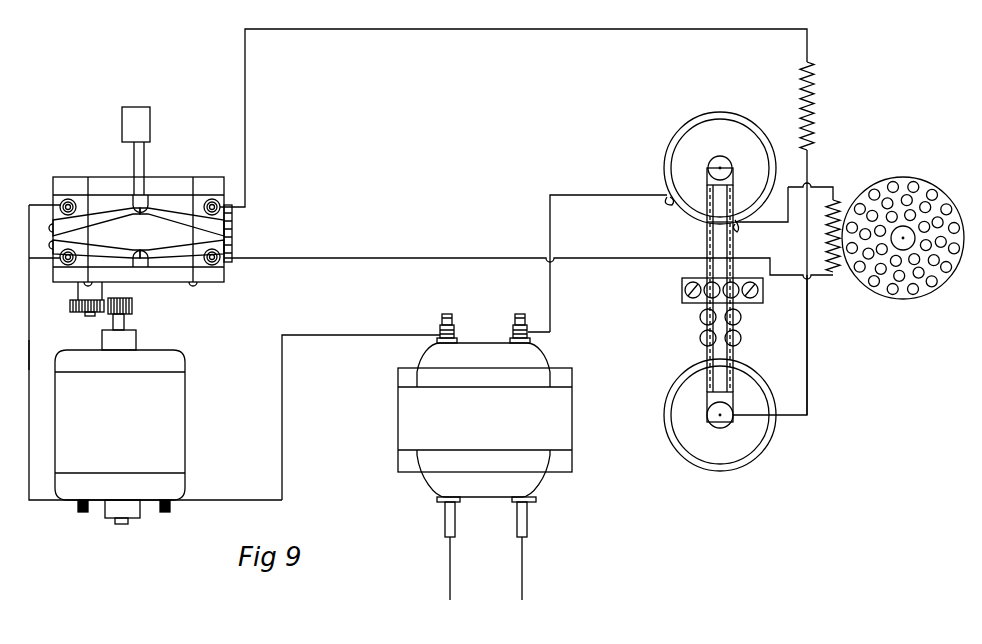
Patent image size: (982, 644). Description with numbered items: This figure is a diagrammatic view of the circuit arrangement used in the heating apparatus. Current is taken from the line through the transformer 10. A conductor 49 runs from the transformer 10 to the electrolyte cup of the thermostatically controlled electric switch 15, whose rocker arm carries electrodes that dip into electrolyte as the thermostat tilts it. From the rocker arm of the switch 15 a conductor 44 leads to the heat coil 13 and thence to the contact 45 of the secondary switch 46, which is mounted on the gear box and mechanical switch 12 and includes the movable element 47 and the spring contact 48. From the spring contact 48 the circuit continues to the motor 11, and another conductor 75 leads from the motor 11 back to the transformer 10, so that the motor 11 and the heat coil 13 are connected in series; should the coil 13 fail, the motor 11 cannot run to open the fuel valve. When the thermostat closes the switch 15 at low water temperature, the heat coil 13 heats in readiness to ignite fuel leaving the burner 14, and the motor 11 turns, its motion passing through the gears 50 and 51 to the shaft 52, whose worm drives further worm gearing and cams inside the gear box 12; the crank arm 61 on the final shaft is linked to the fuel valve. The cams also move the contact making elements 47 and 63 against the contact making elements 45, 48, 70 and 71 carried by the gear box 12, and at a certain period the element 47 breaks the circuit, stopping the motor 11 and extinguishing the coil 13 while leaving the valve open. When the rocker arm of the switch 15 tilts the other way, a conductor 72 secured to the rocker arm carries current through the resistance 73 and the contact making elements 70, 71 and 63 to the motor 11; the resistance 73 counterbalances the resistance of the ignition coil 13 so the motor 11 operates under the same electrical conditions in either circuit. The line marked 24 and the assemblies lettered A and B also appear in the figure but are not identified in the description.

The transformer 10 is at (488, 420).
The motor 11 is at (125, 423).
The gear box and mechanical switch 12 is at (136, 233).
The heat coil 13 is at (840, 270).
The burner 14 is at (914, 168).
The thermostatically controlled electric switch 15 is at (738, 334).
The conductor 24 is at (29, 356).
The conductor 44 is at (782, 244).
The contact 45 is at (220, 262).
The secondary switch 46 is at (182, 255).
The movable element 47 is at (142, 268).
The spring contact 48 is at (96, 255).
The conductor 49 is at (585, 303).
The gear 50 is at (132, 306).
The gear 51 is at (72, 312).
The shaft 52 is at (78, 292).
The crank arm 61 is at (140, 107).
The contact making element 63 is at (144, 200).
The contact making element 70 is at (100, 212).
The contact making element 71 is at (175, 212).
The conductor 72 is at (807, 352).
The resistance 73 is at (814, 102).
The conductor 75 is at (282, 381).
The belt and pulley assembly A is at (722, 112).
The switch box B is at (135, 196).